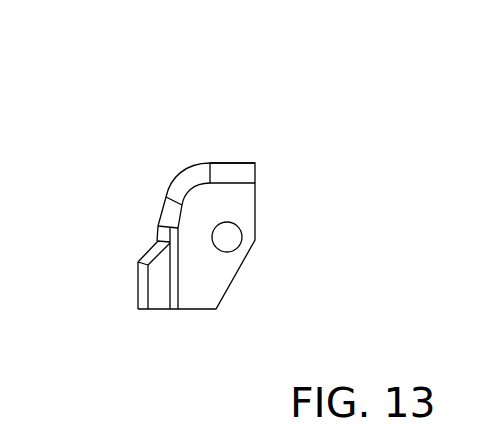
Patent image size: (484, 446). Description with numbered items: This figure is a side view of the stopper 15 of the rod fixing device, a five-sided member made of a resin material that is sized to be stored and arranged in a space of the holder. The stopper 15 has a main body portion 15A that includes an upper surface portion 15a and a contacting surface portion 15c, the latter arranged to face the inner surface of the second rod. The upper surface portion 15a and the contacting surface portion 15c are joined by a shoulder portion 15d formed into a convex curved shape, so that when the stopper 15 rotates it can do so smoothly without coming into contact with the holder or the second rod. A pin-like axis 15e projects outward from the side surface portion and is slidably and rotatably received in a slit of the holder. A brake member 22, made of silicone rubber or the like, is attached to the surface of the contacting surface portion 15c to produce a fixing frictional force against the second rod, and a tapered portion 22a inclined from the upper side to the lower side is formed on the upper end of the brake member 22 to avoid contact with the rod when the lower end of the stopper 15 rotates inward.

The stopper 15 is at (313, 84).
The main body portion 15A is at (257, 210).
The upper surface portion 15a is at (223, 163).
The contacting surface portion 15c is at (158, 227).
The shoulder portion 15d is at (178, 172).
The pin-like axis 15e is at (227, 237).
The brake member 22 is at (143, 284).
The tapered portion 22a is at (148, 258).